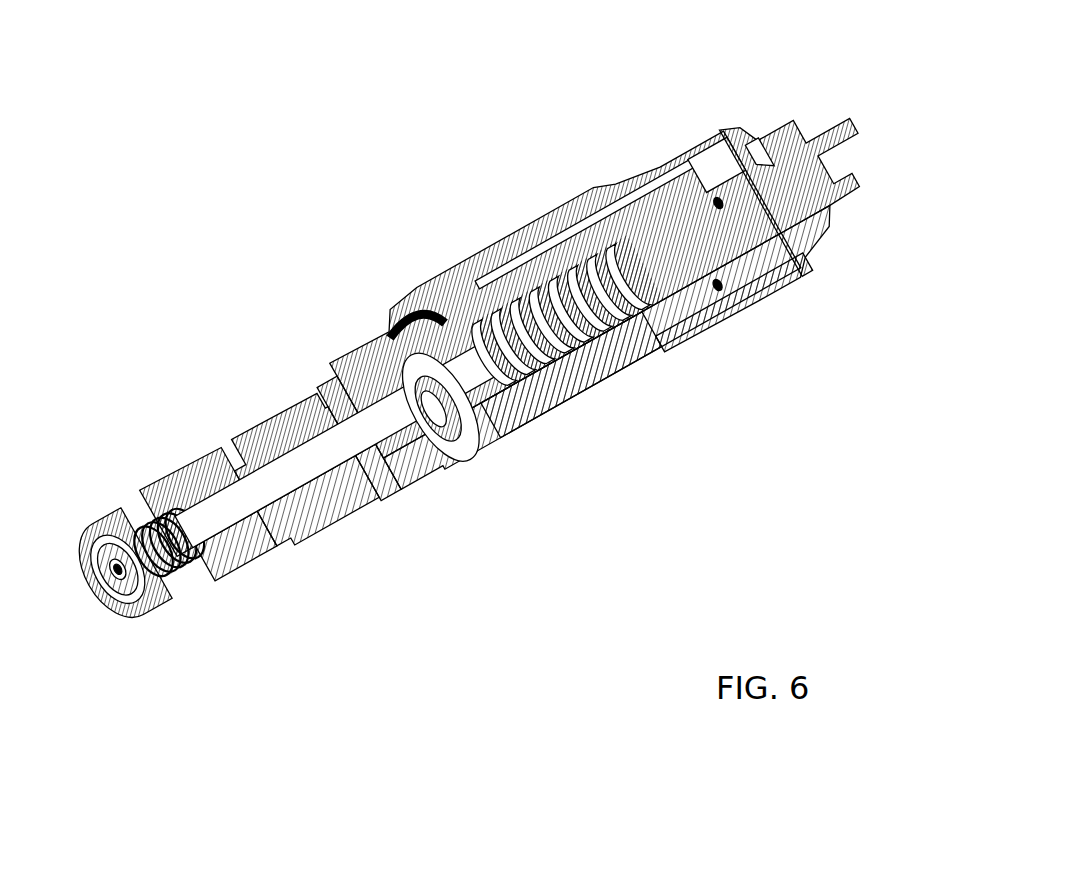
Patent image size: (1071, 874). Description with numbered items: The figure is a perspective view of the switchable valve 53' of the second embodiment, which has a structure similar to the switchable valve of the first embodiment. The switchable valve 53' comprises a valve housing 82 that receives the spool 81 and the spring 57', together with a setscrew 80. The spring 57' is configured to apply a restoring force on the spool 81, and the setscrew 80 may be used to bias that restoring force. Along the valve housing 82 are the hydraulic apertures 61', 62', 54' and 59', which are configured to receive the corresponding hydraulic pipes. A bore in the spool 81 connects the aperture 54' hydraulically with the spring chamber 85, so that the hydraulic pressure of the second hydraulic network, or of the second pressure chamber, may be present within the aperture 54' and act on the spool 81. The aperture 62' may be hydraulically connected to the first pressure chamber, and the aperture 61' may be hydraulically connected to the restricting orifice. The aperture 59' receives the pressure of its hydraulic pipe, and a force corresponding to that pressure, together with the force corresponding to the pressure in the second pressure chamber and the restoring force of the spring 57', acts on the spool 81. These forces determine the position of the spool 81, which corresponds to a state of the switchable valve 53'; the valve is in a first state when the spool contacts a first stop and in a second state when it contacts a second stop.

The switchable valve 53′ is at (660, 105).
The hydraulic aperture 54′ is at (343, 497).
The spring 57′ is at (668, 348).
The hydraulic aperture 59′ is at (98, 617).
The hydraulic aperture 61′ is at (173, 580).
The hydraulic aperture 62′ is at (260, 540).
The setscrew 80 is at (805, 205).
The spool 81 is at (477, 455).
The valve housing 82 is at (565, 400).
The spring chamber 85 is at (600, 380).